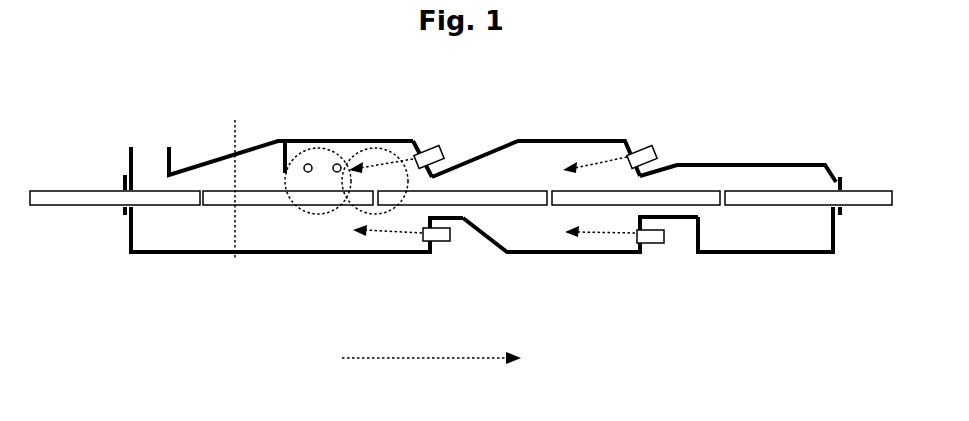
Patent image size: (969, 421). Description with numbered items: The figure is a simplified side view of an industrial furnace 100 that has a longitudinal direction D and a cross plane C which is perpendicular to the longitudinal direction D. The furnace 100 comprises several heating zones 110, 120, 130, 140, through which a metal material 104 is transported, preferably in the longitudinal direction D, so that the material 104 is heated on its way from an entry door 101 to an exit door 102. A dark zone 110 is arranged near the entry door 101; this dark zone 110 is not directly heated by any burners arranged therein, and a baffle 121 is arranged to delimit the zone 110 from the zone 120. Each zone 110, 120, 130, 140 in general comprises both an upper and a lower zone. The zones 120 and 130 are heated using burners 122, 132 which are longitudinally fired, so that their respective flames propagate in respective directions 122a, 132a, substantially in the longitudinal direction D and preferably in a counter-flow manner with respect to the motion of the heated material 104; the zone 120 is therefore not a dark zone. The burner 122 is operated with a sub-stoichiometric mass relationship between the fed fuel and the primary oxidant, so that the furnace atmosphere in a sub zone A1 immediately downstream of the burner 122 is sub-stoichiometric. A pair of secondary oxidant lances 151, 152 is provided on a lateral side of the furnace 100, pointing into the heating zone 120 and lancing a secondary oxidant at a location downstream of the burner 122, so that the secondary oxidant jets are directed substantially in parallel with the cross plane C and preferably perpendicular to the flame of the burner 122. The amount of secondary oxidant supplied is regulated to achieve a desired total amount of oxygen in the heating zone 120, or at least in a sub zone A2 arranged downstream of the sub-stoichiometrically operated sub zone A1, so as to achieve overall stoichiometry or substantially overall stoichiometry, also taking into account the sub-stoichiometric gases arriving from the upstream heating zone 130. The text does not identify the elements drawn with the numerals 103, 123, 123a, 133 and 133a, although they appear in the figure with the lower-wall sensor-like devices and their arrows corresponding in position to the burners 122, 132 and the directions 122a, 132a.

The industrial furnace 100 is at (275, 310).
The entry door 101 is at (110, 195).
The exit door 102 is at (854, 195).
The inlet housing wall 103 is at (277, 157).
The metal material 104 is at (703, 190).
The dark zone 110 is at (183, 199).
The heating zone 120 is at (349, 196).
The baffle 121 is at (272, 160).
The burner 122 is at (432, 146).
The flame propagation direction 122a is at (381, 171).
The first lower sensor 123 is at (438, 242).
The sensing direction of sensor 123 123a is at (387, 236).
The heating zone 130 is at (565, 196).
The burner 132 is at (643, 148).
The flame propagation direction 132a is at (595, 171).
The second lower sensor 133 is at (653, 243).
The sensing direction of sensor 133 133a is at (600, 238).
The heating zone 140 is at (738, 208).
The secondary oxidant lance 151 is at (309, 164).
The secondary oxidant lance 152 is at (338, 164).
The sub zone A1 is at (353, 208).
The sub zone A2 is at (296, 199).
The cross plane C is at (242, 189).
The longitudinal direction D is at (431, 365).